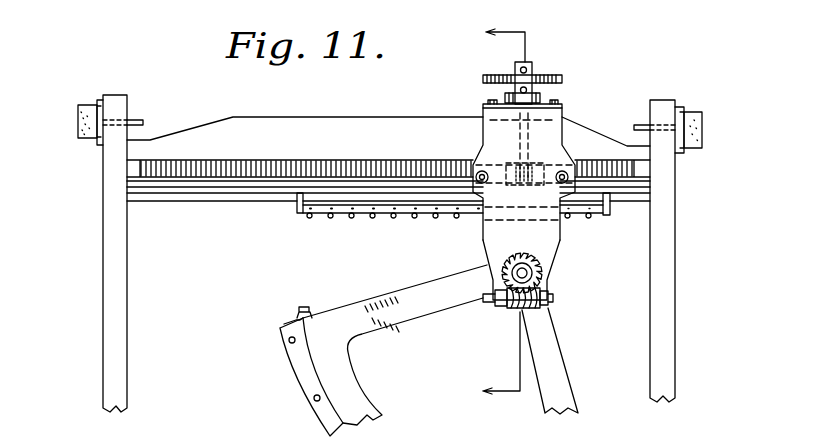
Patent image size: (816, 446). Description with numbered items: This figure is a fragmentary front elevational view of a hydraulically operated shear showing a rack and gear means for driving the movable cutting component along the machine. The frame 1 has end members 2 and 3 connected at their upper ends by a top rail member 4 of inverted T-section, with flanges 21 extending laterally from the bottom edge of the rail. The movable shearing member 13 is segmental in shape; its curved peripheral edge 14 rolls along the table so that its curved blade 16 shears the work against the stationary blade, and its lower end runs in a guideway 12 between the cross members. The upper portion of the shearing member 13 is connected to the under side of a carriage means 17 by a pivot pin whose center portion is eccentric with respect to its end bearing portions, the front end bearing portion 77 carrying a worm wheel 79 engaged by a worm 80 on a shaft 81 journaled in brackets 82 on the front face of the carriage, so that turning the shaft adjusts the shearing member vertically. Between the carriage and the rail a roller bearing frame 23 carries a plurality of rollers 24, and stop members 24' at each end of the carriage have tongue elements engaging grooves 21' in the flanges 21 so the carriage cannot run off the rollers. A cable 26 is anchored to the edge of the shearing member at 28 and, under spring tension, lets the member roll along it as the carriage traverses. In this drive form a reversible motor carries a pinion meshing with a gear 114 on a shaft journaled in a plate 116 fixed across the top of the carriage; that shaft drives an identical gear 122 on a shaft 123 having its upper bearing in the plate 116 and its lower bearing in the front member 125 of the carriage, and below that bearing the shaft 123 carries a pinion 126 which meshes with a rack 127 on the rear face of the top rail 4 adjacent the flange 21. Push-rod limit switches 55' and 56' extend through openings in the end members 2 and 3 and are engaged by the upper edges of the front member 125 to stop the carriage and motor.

The frame 1 is at (686, 296).
The end member 2 is at (668, 346).
The end member 3 is at (108, 313).
The top rail member 4 is at (234, 118).
The guideway 12 is at (530, 214).
The shearing member 13 is at (385, 295).
The curved peripheral edge 14 is at (320, 416).
The curved blade 16 is at (298, 366).
The carriage means 17 is at (472, 253).
The flange 21 is at (388, 208).
The groove 21' is at (388, 215).
The frame 23 is at (364, 216).
The roller 24 is at (428, 228).
The stop member 24' is at (442, 222).
The cable 26 is at (288, 321).
The anchor point 28 is at (300, 311).
The limit switch 55' is at (689, 149).
The limit switch 56' is at (89, 141).
The front end bearing portion 77 is at (533, 276).
The worm wheel 79 is at (520, 253).
The worm 80 is at (518, 309).
The shaft 81 is at (483, 297).
The bracket 82 is at (500, 306).
The gear 114 is at (562, 79).
The plate 116 is at (560, 108).
The gear 122 is at (505, 97).
The shaft 123 is at (483, 138).
The front member 125 is at (483, 233).
The pinion 126 is at (532, 170).
The rack 127 is at (337, 160).